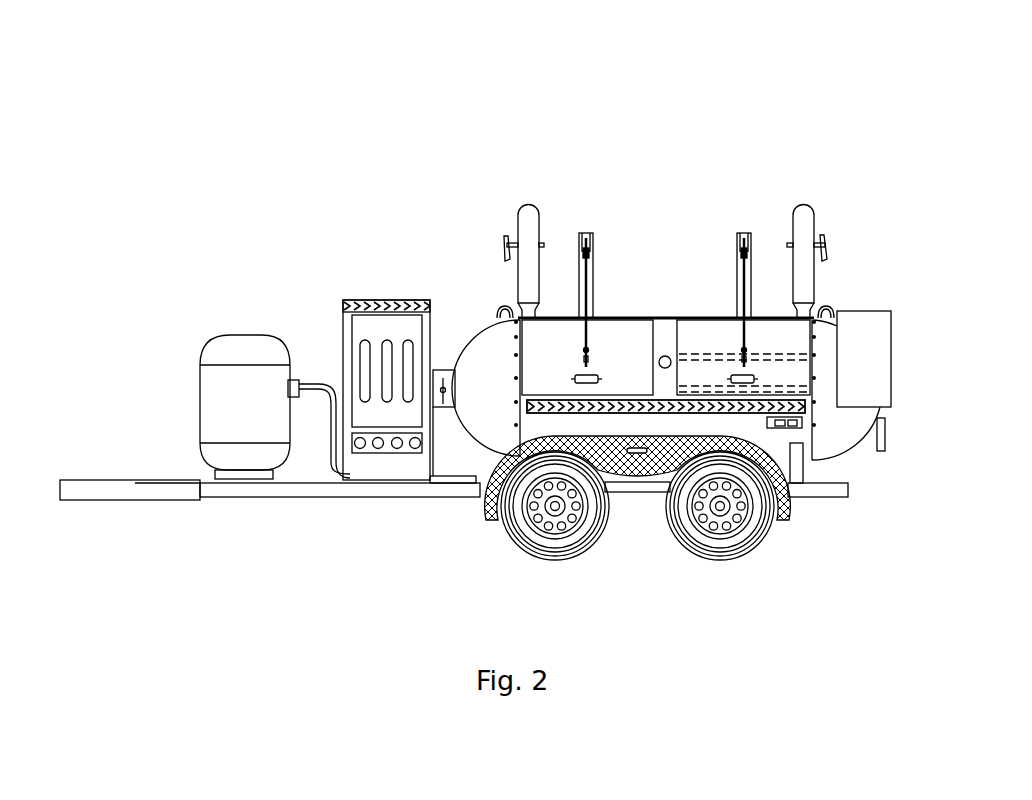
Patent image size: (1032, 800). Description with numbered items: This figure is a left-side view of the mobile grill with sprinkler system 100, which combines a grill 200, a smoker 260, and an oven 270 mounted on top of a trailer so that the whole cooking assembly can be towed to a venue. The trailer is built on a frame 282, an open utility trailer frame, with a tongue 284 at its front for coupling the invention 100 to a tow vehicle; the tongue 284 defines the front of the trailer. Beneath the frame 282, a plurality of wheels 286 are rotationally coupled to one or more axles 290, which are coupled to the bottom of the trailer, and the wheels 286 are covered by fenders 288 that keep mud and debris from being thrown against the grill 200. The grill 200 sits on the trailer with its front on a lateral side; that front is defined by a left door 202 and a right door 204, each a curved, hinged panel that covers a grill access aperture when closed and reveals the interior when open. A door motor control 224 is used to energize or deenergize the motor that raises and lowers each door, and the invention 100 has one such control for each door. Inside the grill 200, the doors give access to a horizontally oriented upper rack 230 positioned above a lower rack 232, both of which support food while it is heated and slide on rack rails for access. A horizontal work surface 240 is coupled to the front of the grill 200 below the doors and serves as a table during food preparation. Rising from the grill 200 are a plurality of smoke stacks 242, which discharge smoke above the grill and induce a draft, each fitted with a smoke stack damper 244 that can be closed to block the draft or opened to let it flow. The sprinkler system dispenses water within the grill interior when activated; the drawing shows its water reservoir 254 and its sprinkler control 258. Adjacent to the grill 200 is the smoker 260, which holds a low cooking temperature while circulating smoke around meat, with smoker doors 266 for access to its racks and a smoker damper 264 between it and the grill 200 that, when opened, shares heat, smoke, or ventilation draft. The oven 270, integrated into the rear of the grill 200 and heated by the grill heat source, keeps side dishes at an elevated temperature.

The mobile grill with sprinkler system 100 is at (72, 146).
The grill 200 is at (483, 327).
The left door 202 is at (600, 335).
The right door 204 is at (694, 333).
The door motor control 224 is at (798, 424).
The upper rack 230 is at (780, 358).
The lower rack 232 is at (800, 390).
The work surface 240 is at (516, 418).
The smoke stacks 242 is at (533, 205).
The smoke stack damper 244 is at (505, 240).
The water reservoir 254 is at (208, 390).
The sprinkler control 258 is at (780, 425).
The smoker 260 is at (348, 300).
The smoker damper 264 is at (443, 373).
The smoker doors 266 is at (367, 420).
The oven 270 is at (892, 380).
The frame 282 is at (262, 490).
The tongue 284 is at (68, 500).
The wheels 286 is at (677, 548).
The fenders 288 is at (790, 515).
The axles 290 is at (555, 507).